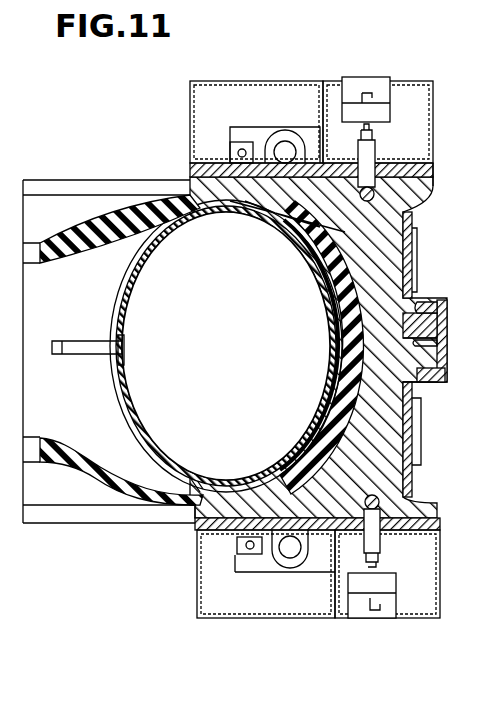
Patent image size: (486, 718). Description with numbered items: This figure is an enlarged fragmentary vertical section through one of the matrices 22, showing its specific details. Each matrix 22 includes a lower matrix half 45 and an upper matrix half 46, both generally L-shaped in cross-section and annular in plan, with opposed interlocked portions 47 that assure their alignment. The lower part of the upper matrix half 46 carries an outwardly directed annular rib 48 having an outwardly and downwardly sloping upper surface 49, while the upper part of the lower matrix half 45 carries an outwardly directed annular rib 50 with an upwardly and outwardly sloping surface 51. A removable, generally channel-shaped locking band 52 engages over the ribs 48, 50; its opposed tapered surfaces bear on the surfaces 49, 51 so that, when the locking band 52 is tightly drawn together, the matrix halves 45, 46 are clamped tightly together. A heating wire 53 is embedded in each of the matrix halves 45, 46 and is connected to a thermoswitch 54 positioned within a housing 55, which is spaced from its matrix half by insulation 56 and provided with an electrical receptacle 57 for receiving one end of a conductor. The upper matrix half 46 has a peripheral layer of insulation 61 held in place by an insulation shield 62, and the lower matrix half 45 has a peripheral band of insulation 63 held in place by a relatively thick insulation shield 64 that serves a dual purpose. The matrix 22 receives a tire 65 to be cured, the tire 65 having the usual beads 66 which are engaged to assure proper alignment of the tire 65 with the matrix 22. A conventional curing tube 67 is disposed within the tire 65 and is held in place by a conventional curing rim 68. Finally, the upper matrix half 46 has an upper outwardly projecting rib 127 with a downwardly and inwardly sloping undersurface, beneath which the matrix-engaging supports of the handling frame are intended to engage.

The matrix 22 is at (166, 174).
The lower matrix half 45 is at (200, 512).
The upper matrix half 46 is at (258, 214).
The interlocked portions 47 is at (430, 346).
The annular rib 48 is at (428, 327).
The sloping upper surface 49 is at (440, 308).
The annular rib 50 is at (447, 378).
The sloping surface 51 is at (416, 386).
The locking band 52 is at (440, 300).
The heating wire 53 is at (378, 205).
The thermoswitch 54 is at (286, 140).
The housing 55 is at (230, 80).
The insulation 56 is at (436, 166).
The electrical receptacle 57 is at (378, 90).
The peripheral layer of insulation 61 is at (413, 250).
The insulation shield 62 is at (414, 276).
The peripheral band of insulation 63 is at (416, 402).
The insulation shield 64 is at (422, 456).
The tire 65 is at (128, 470).
The beads 66 is at (45, 240).
The curing tube 67 is at (128, 272).
The curing rim 68 is at (102, 310).
The upper outwardly projecting rib 127 is at (434, 183).